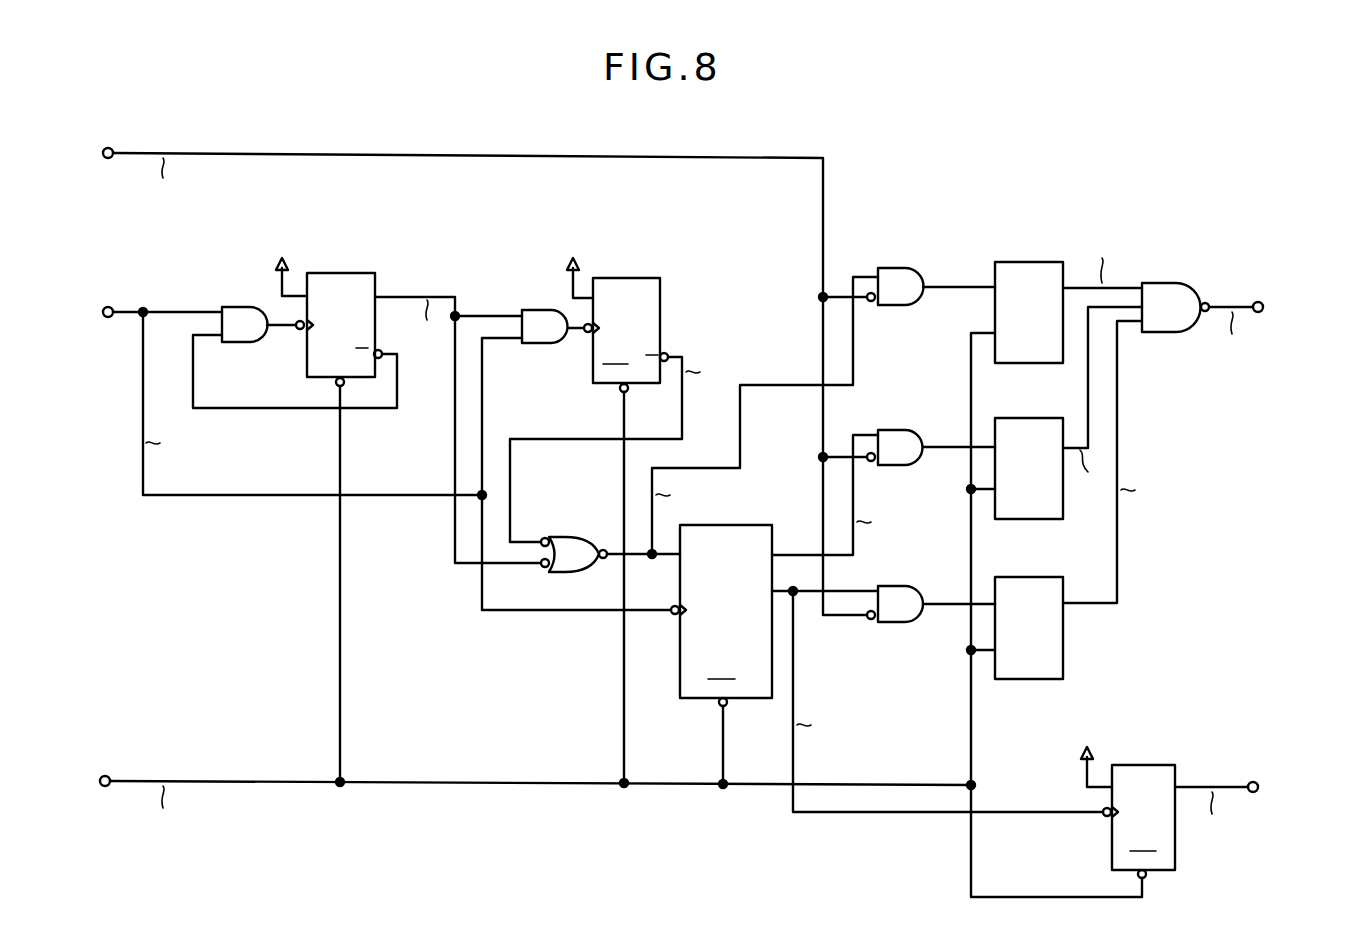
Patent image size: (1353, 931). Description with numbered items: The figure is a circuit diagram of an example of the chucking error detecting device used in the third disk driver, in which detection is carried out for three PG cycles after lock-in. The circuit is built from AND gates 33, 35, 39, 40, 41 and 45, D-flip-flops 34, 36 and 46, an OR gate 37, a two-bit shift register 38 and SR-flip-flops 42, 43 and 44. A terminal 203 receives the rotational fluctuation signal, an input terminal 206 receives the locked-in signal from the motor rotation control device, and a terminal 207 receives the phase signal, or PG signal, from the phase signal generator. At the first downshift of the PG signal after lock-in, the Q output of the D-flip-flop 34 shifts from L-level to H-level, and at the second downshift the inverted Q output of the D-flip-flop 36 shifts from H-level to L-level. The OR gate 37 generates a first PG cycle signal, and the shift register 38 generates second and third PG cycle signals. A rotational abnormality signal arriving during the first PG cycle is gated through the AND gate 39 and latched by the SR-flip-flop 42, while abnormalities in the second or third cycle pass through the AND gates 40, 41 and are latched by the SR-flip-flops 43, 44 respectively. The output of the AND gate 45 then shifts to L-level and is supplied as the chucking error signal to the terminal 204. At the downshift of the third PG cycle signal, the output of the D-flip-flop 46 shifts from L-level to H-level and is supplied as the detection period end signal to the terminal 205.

The AND gate 33 is at (238, 306).
The D-flip-flop 34 is at (337, 272).
The AND gate 35 is at (534, 308).
The D-flip-flop 36 is at (628, 276).
The OR gate 37 is at (563, 534).
The 2-bit shift register 38 is at (748, 524).
The AND gate 39 is at (891, 267).
The AND gate 40 is at (894, 429).
The AND gate 41 is at (893, 625).
The SR-flip-flop 42 is at (1025, 261).
The SR-flip-flop 43 is at (1025, 417).
The SR-flip-flop 44 is at (1028, 576).
The AND gate 45 is at (1175, 281).
The D-flip-flop 46 is at (1145, 764).
The terminal 203 is at (455, 376).
The terminal 204 is at (1267, 331).
The terminal 205 is at (1248, 811).
The input terminal 206 is at (508, 805).
The terminal 207 is at (361, 455).